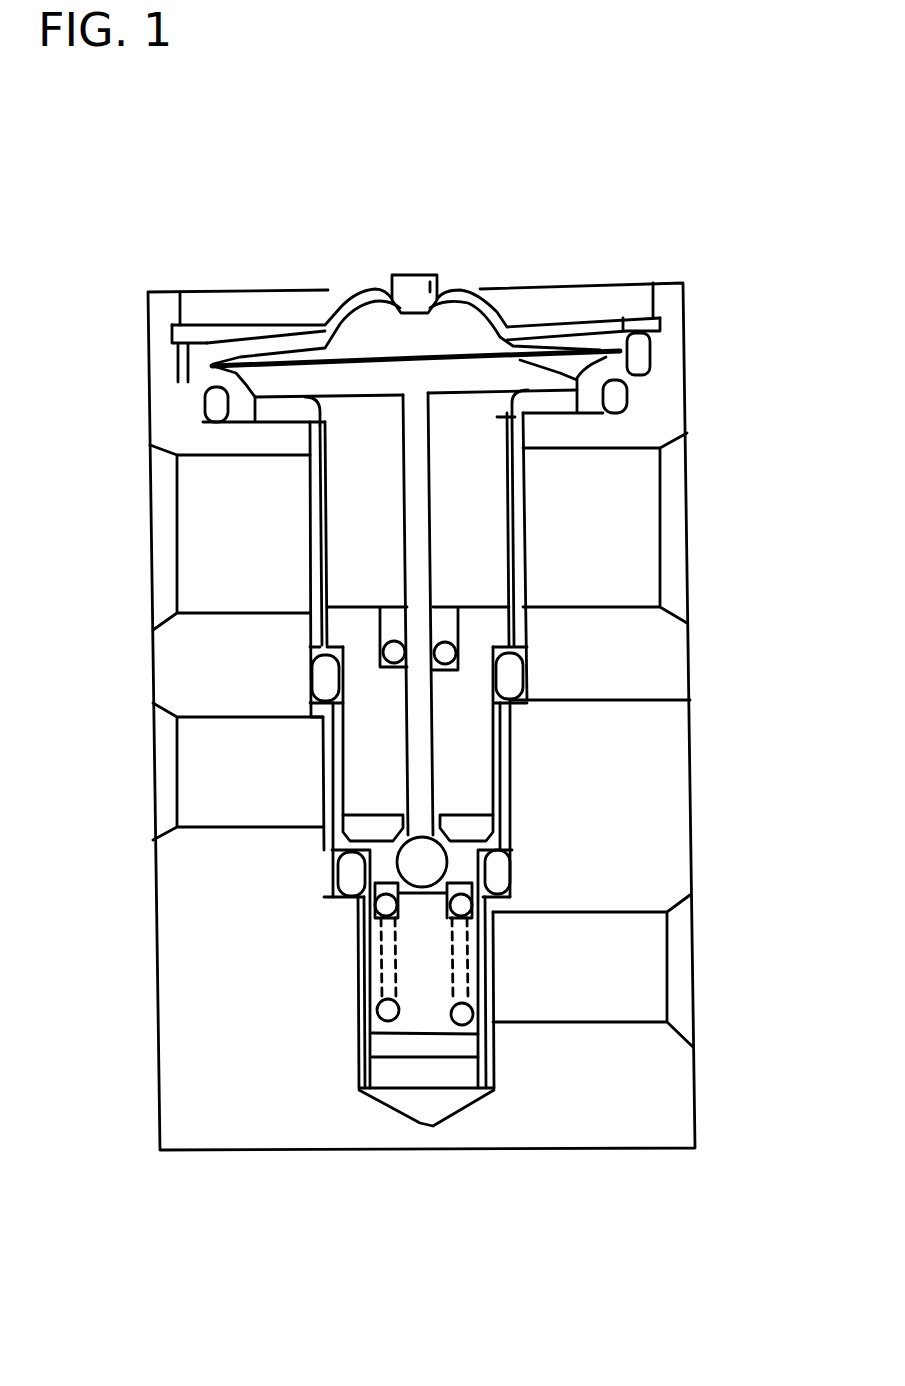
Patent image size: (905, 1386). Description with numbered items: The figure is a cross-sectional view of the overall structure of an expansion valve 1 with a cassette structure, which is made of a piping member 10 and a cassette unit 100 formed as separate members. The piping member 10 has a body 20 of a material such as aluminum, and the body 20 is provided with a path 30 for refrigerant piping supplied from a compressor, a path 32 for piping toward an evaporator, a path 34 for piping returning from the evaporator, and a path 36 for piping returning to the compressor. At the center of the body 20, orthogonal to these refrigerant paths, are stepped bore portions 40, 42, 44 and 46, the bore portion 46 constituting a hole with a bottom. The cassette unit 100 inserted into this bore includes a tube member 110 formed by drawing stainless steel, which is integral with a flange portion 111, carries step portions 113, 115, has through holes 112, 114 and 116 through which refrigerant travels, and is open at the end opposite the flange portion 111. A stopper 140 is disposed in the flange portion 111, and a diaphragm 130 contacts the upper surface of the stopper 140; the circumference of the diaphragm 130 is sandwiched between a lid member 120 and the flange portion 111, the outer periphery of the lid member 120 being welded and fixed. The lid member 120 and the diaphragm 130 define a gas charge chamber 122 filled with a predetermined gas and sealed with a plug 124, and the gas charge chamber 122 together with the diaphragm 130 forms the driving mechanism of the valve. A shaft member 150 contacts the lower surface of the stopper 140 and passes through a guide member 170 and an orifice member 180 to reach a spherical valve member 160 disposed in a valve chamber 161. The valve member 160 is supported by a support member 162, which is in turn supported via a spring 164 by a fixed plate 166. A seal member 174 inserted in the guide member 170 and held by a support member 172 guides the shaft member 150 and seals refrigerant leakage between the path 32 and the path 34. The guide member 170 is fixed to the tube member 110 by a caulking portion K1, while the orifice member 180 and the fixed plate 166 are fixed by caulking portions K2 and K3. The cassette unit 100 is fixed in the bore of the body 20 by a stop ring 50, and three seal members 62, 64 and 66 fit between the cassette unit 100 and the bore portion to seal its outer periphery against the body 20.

The expansion valve 1 is at (694, 211).
The piping member 10 is at (699, 398).
The body 20 is at (660, 731).
The path 30 is at (646, 955).
The path 32 is at (325, 800).
The path 34 is at (217, 552).
The path 36 is at (637, 532).
The bore portion 40 is at (221, 322).
The bore portion 42 is at (310, 466).
The bore portion 44 is at (338, 716).
The bore portion 46 is at (402, 1088).
The stop ring 50 is at (180, 322).
The seal member 62 is at (205, 405).
The seal member 64 is at (527, 680).
The seal member 66 is at (500, 863).
The cassette unit 100 is at (529, 253).
The tube member 110 is at (510, 455).
The flange portion 111 is at (572, 400).
The through hole 112 is at (520, 565).
The step portion 113 is at (527, 652).
The through hole 114 is at (497, 772).
The step portion 115 is at (497, 837).
The through hole 116 is at (495, 982).
The lid member 120 is at (343, 300).
The gas charge chamber 122 is at (383, 342).
The plug 124 is at (438, 281).
The diaphragm 130 is at (545, 350).
The stopper 140 is at (212, 383).
The shaft member 150 is at (417, 568).
The valve member 160 is at (422, 860).
The valve chamber 161 is at (372, 880).
The support member 162 is at (422, 915).
The spring 164 is at (372, 1035).
The fixed plate 166 is at (368, 1085).
The guide member 170 is at (323, 648).
The support member 172 is at (458, 605).
The seal member 174 is at (470, 642).
The orifice member 180 is at (345, 841).
The caulking portion K1 is at (315, 636).
The caulking portion K2 is at (497, 822).
The caulking portion K3 is at (480, 1040).